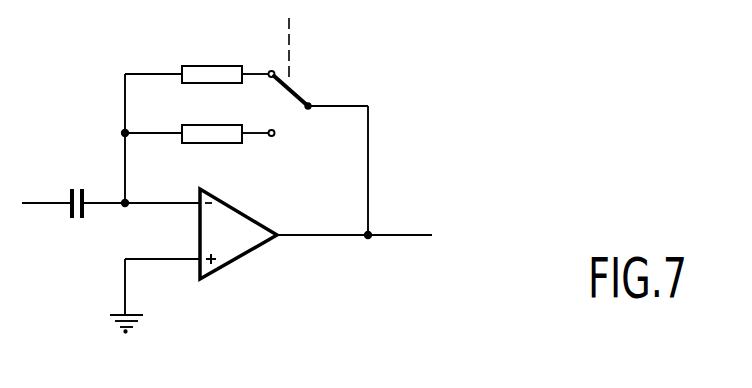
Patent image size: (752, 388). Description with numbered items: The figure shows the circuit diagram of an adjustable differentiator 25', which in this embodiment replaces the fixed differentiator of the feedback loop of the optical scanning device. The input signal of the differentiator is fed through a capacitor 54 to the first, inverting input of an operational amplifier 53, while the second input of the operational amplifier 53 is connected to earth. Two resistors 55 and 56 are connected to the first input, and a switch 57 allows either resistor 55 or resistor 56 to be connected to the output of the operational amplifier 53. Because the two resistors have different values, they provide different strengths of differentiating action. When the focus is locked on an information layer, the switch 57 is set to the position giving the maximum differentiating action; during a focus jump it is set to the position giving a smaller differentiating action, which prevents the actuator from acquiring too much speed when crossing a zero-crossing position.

The adjustable differentiator 25' is at (235, 175).
The operational amplifier 53 is at (253, 252).
The capacitor 54 is at (84, 211).
The resistor 55 is at (209, 66).
The resistor 56 is at (209, 125).
The switch 57 is at (294, 91).